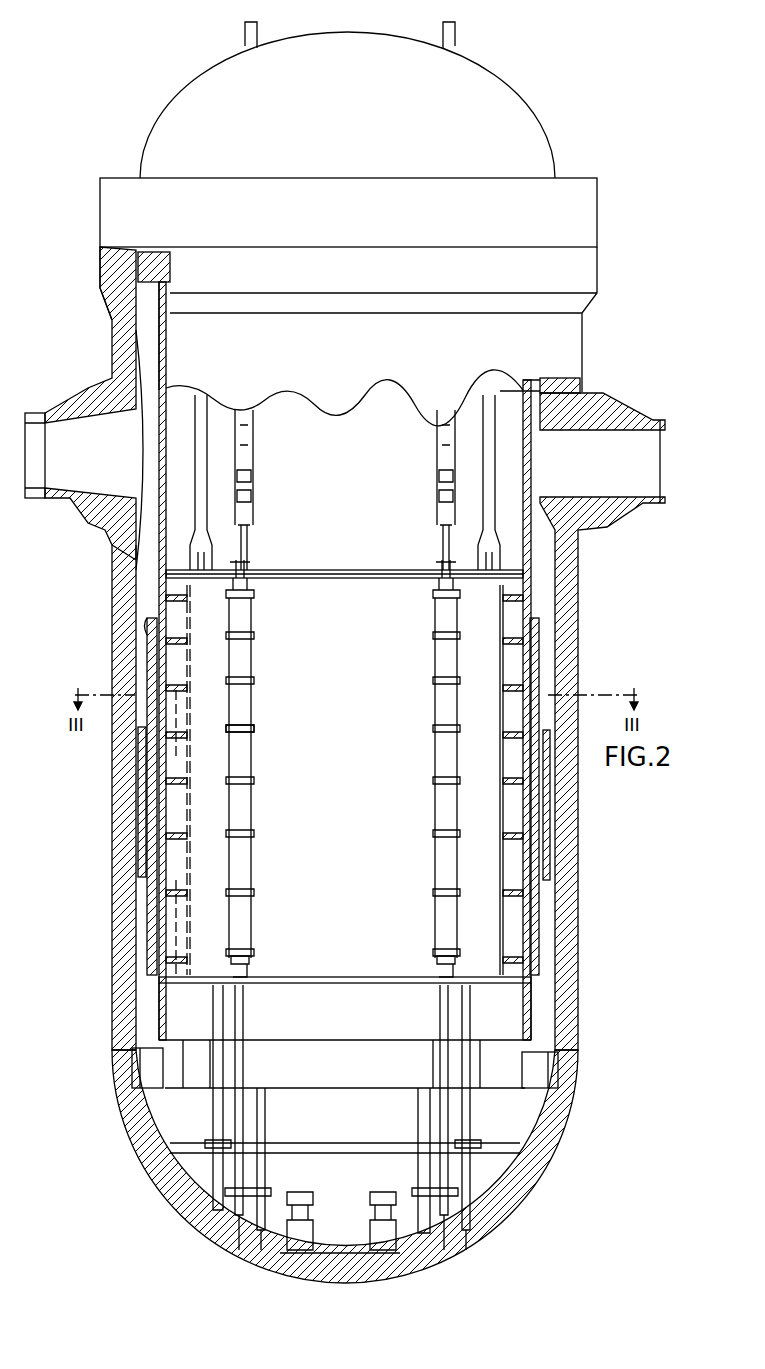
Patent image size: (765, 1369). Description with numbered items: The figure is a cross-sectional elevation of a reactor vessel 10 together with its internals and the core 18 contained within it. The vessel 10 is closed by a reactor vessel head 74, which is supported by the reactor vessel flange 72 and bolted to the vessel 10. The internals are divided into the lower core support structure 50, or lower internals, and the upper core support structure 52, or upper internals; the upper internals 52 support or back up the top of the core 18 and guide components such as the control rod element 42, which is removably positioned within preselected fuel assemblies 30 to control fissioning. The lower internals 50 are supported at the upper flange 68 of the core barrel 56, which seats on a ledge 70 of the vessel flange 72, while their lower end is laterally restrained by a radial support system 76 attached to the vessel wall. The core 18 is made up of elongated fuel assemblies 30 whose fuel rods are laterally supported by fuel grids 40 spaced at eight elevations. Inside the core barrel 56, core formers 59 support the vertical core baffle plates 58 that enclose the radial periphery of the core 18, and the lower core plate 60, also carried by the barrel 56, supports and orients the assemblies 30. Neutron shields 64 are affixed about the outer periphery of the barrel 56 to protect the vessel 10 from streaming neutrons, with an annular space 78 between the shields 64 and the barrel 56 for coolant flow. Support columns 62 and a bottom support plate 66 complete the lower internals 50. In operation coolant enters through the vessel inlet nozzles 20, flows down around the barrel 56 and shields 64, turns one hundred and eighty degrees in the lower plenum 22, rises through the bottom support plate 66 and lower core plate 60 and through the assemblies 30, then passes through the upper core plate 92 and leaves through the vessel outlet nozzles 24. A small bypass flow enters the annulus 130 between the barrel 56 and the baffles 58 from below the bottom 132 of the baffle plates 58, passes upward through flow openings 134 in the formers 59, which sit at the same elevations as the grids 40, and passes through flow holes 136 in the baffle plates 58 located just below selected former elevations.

The reactor vessel 10 is at (577, 618).
The core 18 is at (356, 738).
The vessel inlet nozzles 20 is at (66, 405).
The lower plenum 22 is at (356, 1123).
The vessel outlet nozzles 24 is at (615, 410).
The fuel assemblies 30 is at (254, 622).
The fuel grids 40 is at (255, 728).
The control rod element 42 is at (248, 568).
The lower core support structure 50 is at (487, 621).
The upper core support structure 52 is at (407, 478).
The core barrel 56 is at (155, 515).
The core baffle plates 58 is at (190, 635).
The core formers 59 is at (172, 634).
The lower core plate 60 is at (318, 978).
The support columns 62 is at (245, 1015).
The neutron shields 64 is at (539, 664).
The bottom support plate 66 is at (344, 1045).
The upper flange 68 is at (150, 318).
The ledge 70 is at (140, 298).
The reactor vessel flange 72 is at (106, 278).
The reactor vessel head 74 is at (127, 186).
The radial support system 76 is at (128, 1068).
The annular space 78 is at (546, 740).
The upper core plate 92 is at (341, 576).
The annulus 130 is at (503, 755).
The bottom of the baffle plates 132 is at (215, 975).
The flow openings 134 is at (180, 727).
The flow holes 136 is at (178, 682).